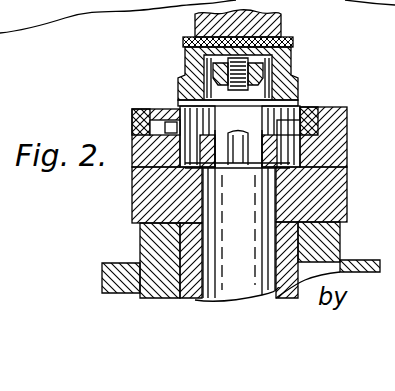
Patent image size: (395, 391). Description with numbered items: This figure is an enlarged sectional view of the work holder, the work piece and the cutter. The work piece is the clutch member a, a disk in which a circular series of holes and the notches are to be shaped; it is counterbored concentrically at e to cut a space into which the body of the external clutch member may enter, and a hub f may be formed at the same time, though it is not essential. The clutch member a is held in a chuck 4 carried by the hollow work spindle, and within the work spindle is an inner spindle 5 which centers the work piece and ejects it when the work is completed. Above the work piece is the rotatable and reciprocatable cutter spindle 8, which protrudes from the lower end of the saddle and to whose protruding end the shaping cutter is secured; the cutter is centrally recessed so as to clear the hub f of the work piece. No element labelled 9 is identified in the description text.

The cutter spindle 8 is at (272, 27).
The nut 9 is at (288, 97).
The hub f is at (203, 108).
The counterbore e is at (185, 114).
The clutch member a is at (322, 108).
The inner spindle 5 is at (255, 198).
The chuck 4 is at (330, 200).